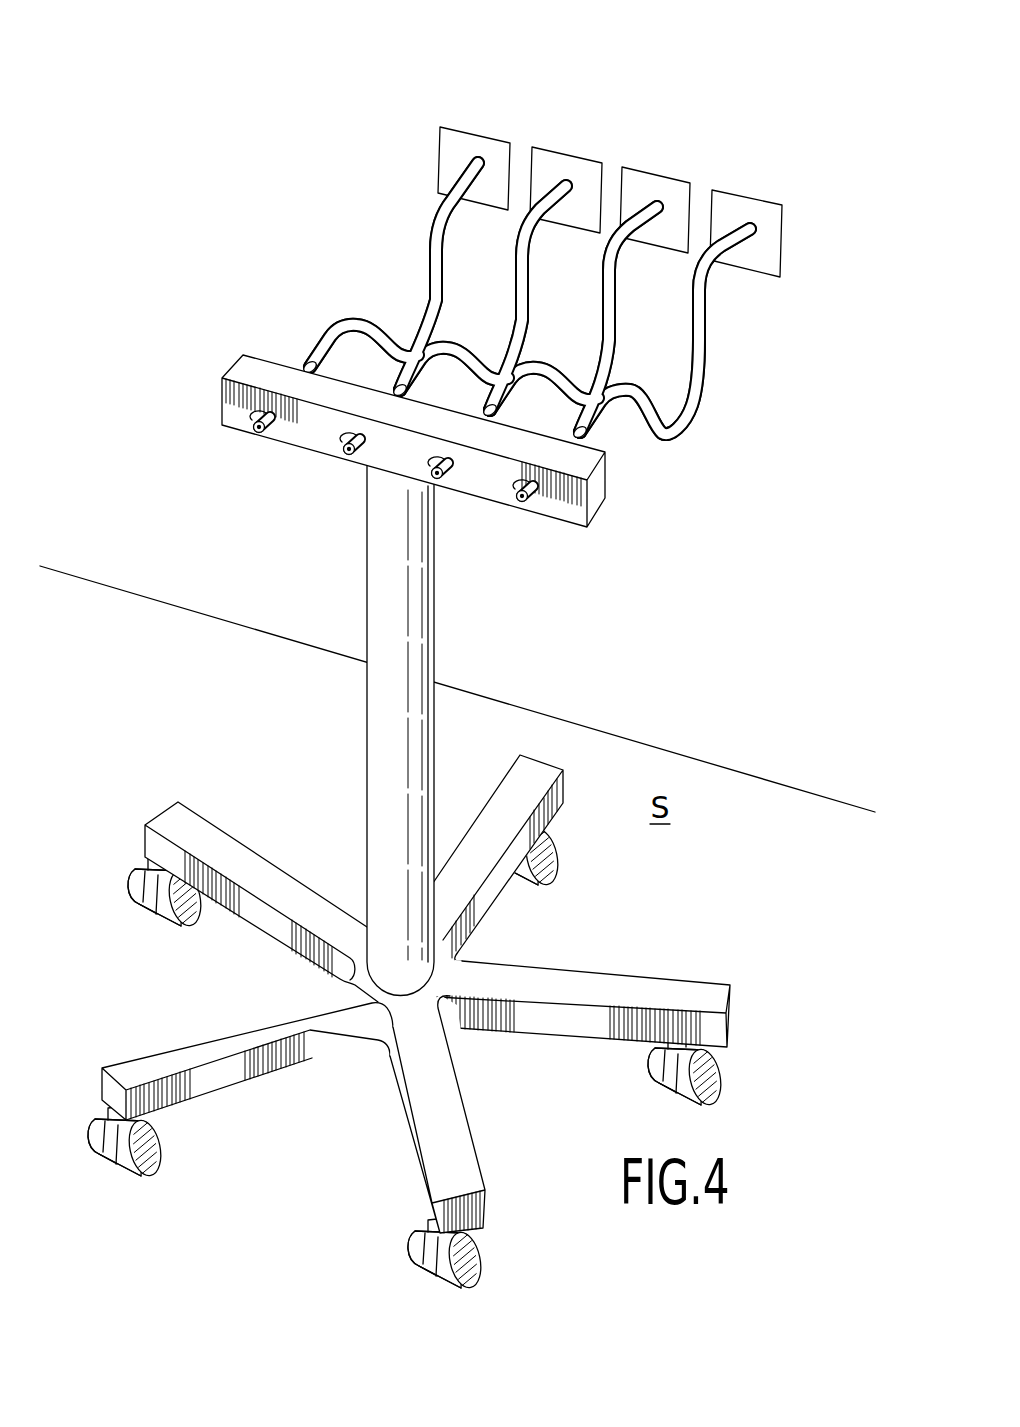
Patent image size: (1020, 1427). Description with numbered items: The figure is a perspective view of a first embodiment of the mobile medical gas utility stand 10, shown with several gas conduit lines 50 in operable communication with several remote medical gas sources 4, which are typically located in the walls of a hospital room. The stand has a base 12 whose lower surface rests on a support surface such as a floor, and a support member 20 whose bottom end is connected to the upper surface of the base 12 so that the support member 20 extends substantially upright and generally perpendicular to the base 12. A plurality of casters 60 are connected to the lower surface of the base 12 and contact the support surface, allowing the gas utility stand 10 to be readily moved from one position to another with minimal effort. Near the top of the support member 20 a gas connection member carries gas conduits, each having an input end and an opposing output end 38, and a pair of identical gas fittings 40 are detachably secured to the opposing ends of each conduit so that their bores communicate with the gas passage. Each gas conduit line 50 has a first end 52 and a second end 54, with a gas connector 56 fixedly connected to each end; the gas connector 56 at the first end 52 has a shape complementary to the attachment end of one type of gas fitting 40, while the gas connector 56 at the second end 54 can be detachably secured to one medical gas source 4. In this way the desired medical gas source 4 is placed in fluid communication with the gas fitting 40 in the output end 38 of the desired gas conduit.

The remote gas source 4 is at (477, 128).
The gas utility stand 10 is at (409, 823).
The base 12 is at (475, 1142).
The support member 20 is at (436, 737).
The output end 38 is at (268, 432).
The gas fitting 40 is at (243, 416).
The gas conduit line 50 is at (518, 287).
The first end 52 is at (325, 350).
The second end 54 is at (476, 208).
The gas connector 56 is at (432, 208).
The caster 60 is at (484, 1256).